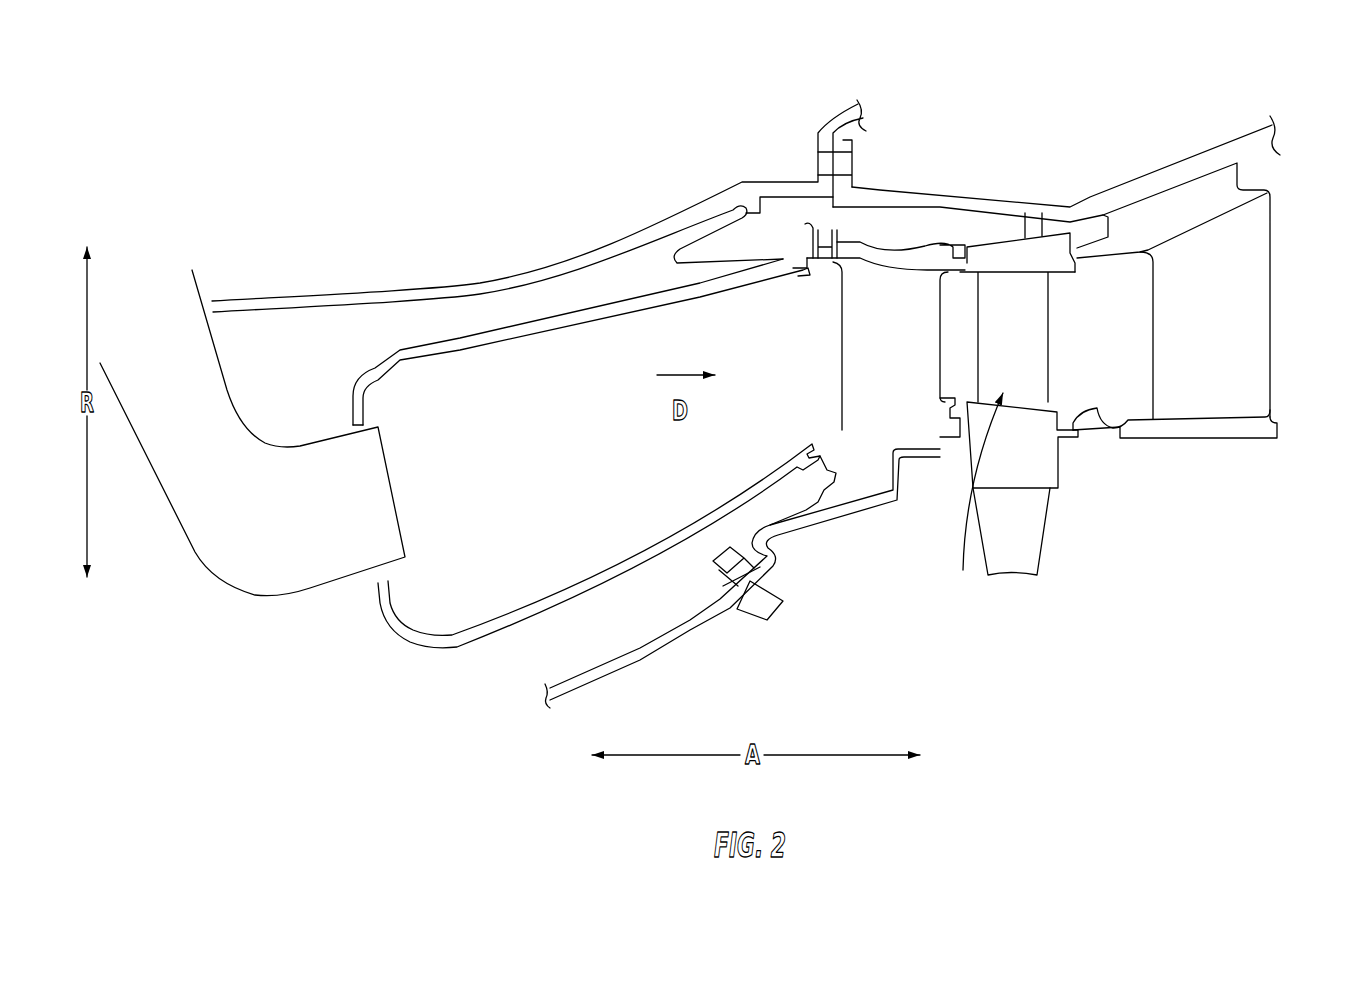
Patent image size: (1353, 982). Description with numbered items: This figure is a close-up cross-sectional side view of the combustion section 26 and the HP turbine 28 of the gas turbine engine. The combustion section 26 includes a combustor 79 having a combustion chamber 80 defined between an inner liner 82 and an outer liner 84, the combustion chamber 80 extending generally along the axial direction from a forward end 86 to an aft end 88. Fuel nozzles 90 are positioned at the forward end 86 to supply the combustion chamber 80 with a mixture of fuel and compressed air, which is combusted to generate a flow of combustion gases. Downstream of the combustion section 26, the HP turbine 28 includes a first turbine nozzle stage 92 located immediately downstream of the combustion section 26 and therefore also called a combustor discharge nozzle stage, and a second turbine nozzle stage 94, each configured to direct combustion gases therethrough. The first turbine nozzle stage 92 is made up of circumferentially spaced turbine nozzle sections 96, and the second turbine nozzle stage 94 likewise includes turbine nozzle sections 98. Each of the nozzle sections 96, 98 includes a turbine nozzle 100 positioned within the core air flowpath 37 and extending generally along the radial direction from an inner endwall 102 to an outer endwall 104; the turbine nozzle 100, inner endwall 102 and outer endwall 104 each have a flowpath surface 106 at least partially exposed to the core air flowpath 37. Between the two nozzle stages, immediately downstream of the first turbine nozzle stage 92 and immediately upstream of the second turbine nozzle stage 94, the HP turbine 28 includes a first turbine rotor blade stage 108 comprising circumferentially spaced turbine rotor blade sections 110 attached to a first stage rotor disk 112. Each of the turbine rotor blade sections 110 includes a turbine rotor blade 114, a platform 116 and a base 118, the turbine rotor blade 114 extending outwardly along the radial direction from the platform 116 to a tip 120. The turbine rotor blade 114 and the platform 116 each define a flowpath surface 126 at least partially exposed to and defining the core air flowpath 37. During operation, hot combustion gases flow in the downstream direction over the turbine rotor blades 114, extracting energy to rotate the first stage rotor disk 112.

The combustion section 26 is at (532, 213).
The HP turbine 28 is at (1032, 170).
The core air flowpath 37 is at (1105, 348).
The combustor 79 is at (423, 316).
The combustion chamber 80 is at (541, 478).
The inner liner 82 is at (545, 600).
The outer liner 84 is at (467, 347).
The forward end 86 is at (353, 632).
The aft end 88 is at (766, 326).
The fuel nozzles 90 is at (275, 477).
The first turbine nozzle stage 92 is at (888, 226).
The second turbine nozzle stage 94 is at (1232, 143).
The turbine nozzle sections 96 is at (832, 321).
The turbine nozzle sections 98 is at (1296, 311).
The turbine nozzle 100 is at (1243, 225).
The inner endwall 102 is at (1197, 430).
The outer endwall 104 is at (867, 257).
The flowpath surface 106 is at (875, 323).
The first turbine rotor blade stage 108 is at (1019, 302).
The turbine rotor blade sections 110 is at (968, 318).
The first stage rotor disk 112 is at (1023, 537).
The turbine rotor blade 114 is at (1030, 297).
The platform 116 is at (1023, 407).
The base 118 is at (953, 445).
The tip 120 is at (1012, 263).
The flowpath surface 126 is at (1030, 322).